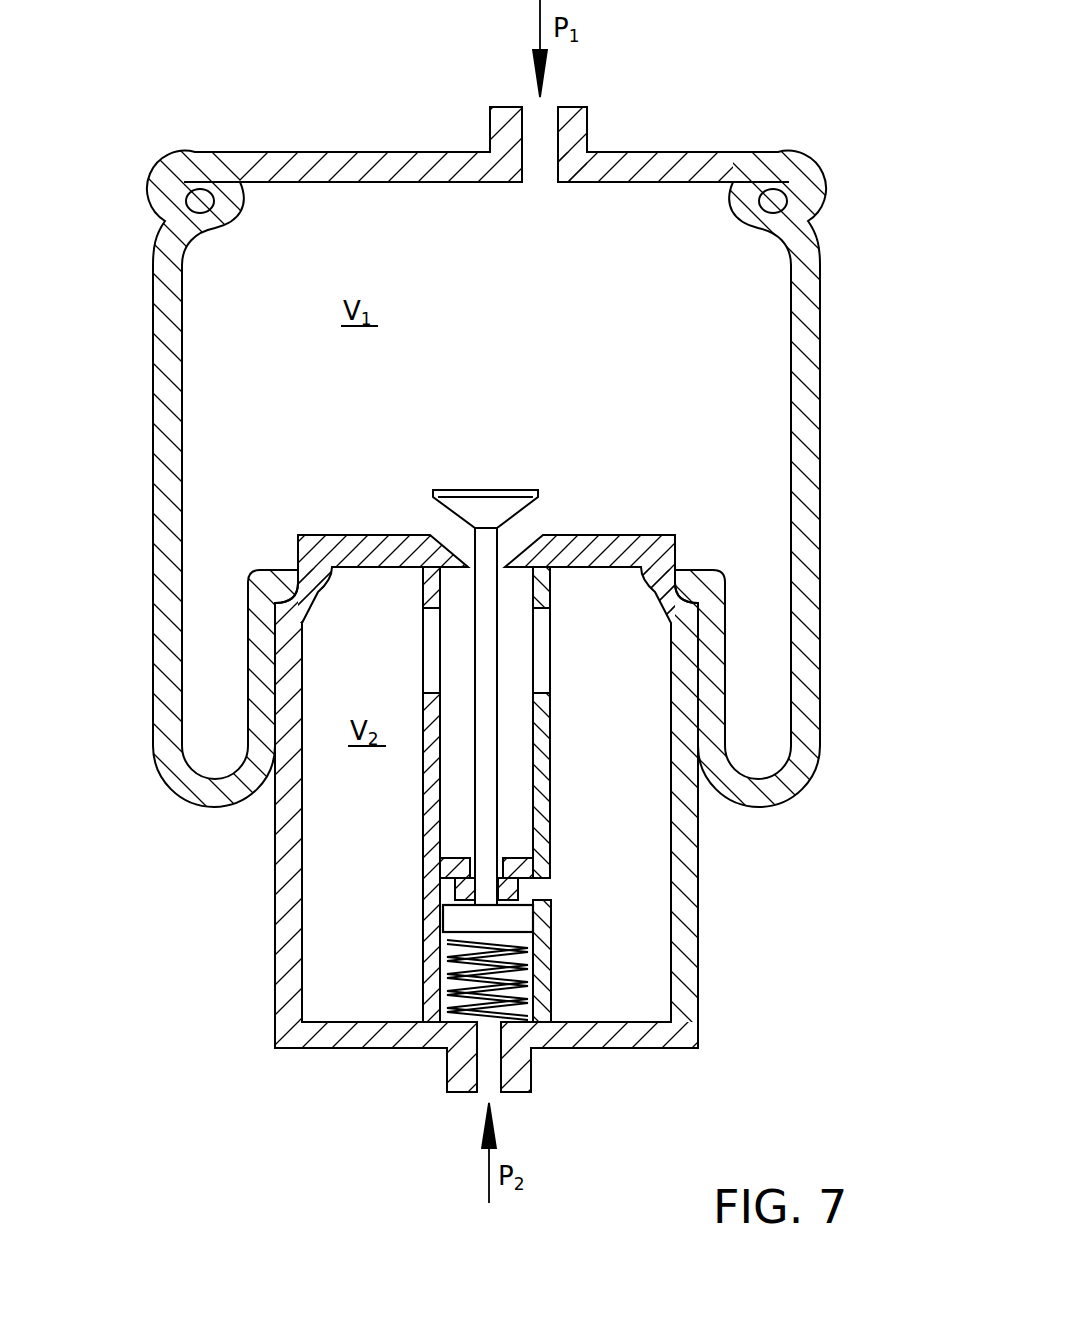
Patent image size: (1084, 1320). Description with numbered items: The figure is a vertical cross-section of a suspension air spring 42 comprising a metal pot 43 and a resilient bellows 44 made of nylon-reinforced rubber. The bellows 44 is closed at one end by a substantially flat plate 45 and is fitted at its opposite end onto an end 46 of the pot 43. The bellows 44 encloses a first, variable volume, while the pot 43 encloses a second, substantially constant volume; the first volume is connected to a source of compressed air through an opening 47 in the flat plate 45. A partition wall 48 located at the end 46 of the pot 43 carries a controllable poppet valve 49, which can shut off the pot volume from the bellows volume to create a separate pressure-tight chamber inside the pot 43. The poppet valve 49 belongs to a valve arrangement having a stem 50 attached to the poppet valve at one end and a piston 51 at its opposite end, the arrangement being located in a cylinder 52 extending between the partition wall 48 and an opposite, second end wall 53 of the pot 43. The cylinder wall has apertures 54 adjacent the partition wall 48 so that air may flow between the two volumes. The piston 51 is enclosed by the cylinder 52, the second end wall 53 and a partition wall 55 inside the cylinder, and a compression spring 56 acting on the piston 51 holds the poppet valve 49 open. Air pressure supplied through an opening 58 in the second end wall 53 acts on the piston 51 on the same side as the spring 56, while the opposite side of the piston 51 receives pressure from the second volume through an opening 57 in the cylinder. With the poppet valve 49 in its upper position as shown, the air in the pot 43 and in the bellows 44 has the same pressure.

The suspension air spring 42 is at (870, 528).
The pot 43 is at (700, 870).
The bellows 44 is at (802, 367).
The flat plate 45 is at (672, 152).
The end of the pot 46 is at (293, 613).
The opening in the flat plate 47 is at (490, 123).
The partition wall 48 is at (333, 533).
The poppet valve 49 is at (506, 492).
The stem 50 is at (482, 778).
The piston 51 is at (460, 917).
The cylinder 52 is at (548, 771).
The second end wall 53 is at (635, 1048).
The apertures 54 is at (432, 652).
The partition wall inside the cylinder 55 is at (527, 862).
The compression spring 56 is at (460, 978).
The opening in the cylinder 57 is at (547, 890).
The opening in the second end wall 58 is at (450, 1072).